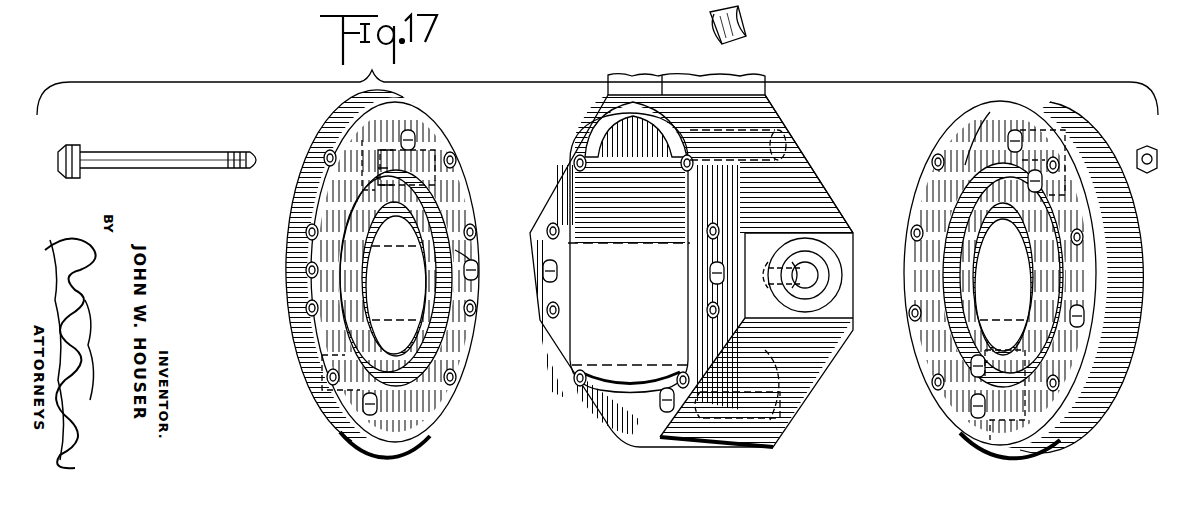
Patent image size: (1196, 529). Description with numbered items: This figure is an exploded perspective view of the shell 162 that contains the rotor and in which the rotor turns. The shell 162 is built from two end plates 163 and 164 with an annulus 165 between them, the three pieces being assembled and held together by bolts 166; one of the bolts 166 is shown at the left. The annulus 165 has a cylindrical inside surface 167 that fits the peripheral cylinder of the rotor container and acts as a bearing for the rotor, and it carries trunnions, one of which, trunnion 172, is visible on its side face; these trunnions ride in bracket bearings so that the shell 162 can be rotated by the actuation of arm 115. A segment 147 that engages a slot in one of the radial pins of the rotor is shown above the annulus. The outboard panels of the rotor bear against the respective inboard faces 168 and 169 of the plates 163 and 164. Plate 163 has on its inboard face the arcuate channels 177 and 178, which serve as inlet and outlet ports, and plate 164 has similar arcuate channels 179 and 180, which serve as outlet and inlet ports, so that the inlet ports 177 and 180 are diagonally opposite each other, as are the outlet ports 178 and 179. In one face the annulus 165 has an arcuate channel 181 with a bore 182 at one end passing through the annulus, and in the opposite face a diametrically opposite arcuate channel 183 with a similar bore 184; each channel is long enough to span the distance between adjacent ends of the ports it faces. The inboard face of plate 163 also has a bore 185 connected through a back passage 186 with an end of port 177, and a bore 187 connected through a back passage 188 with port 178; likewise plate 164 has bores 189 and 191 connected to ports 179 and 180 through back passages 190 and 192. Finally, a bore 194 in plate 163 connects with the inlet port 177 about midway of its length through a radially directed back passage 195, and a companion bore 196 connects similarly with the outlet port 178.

The arm 115 is at (735, 82).
The segment 147 is at (708, 27).
The shell 162 is at (687, 262).
The end plate 163 is at (300, 297).
The end plate 164 is at (1090, 380).
The annulus 165 is at (800, 166).
The bolts 166 is at (162, 152).
The cylindrical inside surface 167 is at (629, 253).
The inboard face 168 is at (340, 124).
The inboard face 169 is at (990, 112).
The trunnion 172 is at (812, 263).
The arcuate channel 177 is at (450, 325).
The arcuate channel 178 is at (330, 325).
The arcuate channel 179 is at (945, 330).
The arcuate channel 180 is at (1055, 284).
The arcuate channel 181 is at (625, 128).
The bore 182 is at (772, 132).
The arcuate channel 183 is at (790, 412).
The bore 184 is at (798, 397).
The bore 185 is at (412, 133).
The back passage 186 is at (420, 155).
The bore 187 is at (370, 416).
The back passage 188 is at (320, 402).
The bore 189 is at (972, 410).
The back passage 190 is at (990, 440).
The bore 191 is at (1022, 141).
The back passage 192 is at (1075, 165).
The bore 194 is at (479, 271).
The back passage 195 is at (456, 252).
The bore 196 is at (306, 270).